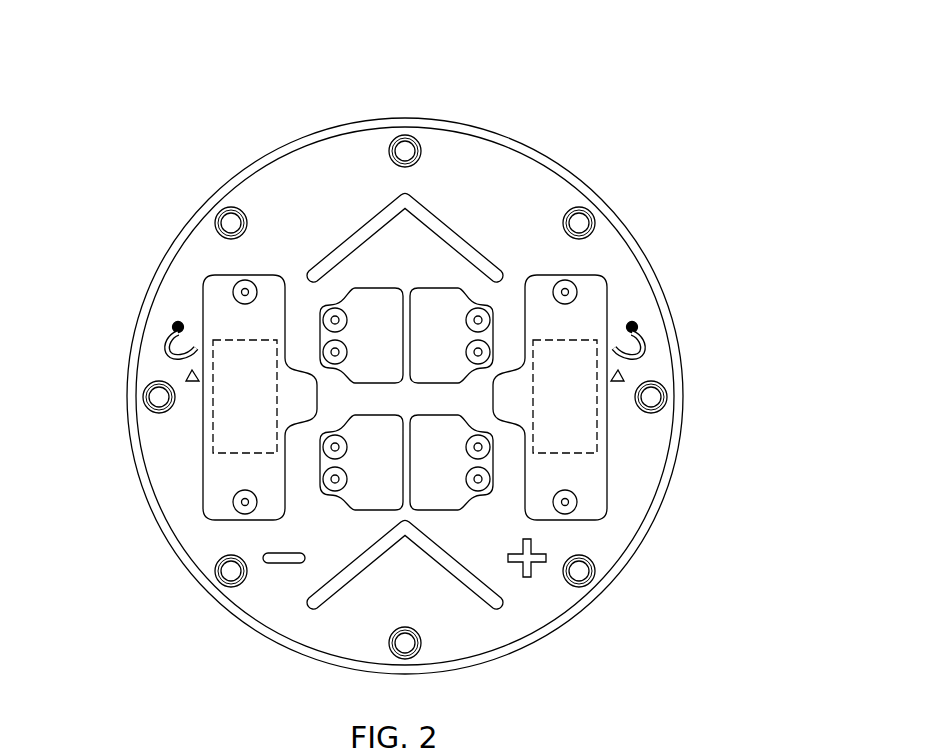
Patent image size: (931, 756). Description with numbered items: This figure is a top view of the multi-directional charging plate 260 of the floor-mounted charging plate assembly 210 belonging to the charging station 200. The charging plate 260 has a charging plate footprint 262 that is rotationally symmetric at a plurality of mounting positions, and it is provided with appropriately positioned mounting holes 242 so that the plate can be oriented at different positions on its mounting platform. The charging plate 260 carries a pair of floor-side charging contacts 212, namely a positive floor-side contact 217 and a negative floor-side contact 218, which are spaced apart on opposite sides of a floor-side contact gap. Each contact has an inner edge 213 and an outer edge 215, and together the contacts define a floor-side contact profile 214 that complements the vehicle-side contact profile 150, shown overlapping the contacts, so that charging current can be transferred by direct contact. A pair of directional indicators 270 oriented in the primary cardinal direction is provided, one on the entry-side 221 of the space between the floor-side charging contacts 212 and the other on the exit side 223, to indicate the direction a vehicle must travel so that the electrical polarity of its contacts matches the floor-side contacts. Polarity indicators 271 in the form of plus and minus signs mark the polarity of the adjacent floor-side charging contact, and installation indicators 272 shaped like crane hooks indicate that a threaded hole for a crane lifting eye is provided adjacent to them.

The charging station 200 is at (100, 95).
The floor-mounted charging plate assembly 210 is at (278, 142).
The multi-directional charging plate 260 is at (258, 192).
The charging plate footprint 262 is at (523, 152).
The mounting holes 242 is at (410, 136).
The exit side 223 is at (342, 217).
The directional indicator 270 is at (462, 236).
The entry-side 221 is at (368, 522).
The floor-side charging contacts 212 is at (203, 300).
The inner edge 213 is at (287, 298).
The floor-side contact profile 214 is at (262, 275).
The outer edge 215 is at (202, 498).
The positive floor-side contact 217 is at (593, 460).
The negative floor-side contact 218 is at (282, 506).
The vehicle-side contact profile 150 is at (212, 418).
The installation indicators 272 is at (645, 347).
The polarity indicators 271 is at (277, 565).